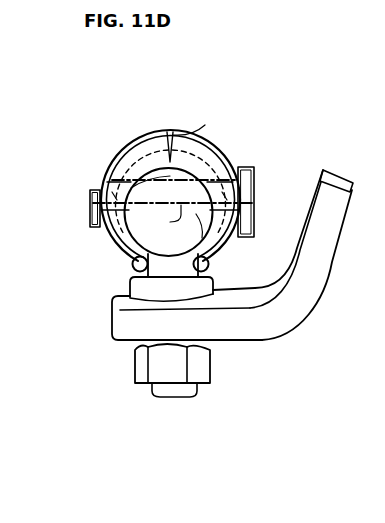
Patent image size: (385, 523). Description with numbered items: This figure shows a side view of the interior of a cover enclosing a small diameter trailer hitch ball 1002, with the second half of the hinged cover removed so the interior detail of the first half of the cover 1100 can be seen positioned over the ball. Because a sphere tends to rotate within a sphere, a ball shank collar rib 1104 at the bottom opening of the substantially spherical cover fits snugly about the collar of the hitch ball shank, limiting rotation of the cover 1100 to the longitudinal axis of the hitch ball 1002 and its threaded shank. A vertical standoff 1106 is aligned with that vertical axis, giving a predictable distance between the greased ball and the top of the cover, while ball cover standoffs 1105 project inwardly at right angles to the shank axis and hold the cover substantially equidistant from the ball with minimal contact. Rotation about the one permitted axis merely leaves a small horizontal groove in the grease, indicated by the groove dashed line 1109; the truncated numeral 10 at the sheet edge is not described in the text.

The cover 1100 is at (163, 135).
The ball cover standoffs 1105 is at (120, 168).
The vertical standoff 1106 is at (175, 135).
The groove dashed line 1109 is at (90, 218).
The trailer hitch ball 1002 is at (129, 234).
The ball shank collar rib 1104 is at (136, 260).
The bracket arm 10 is at (248, 283).